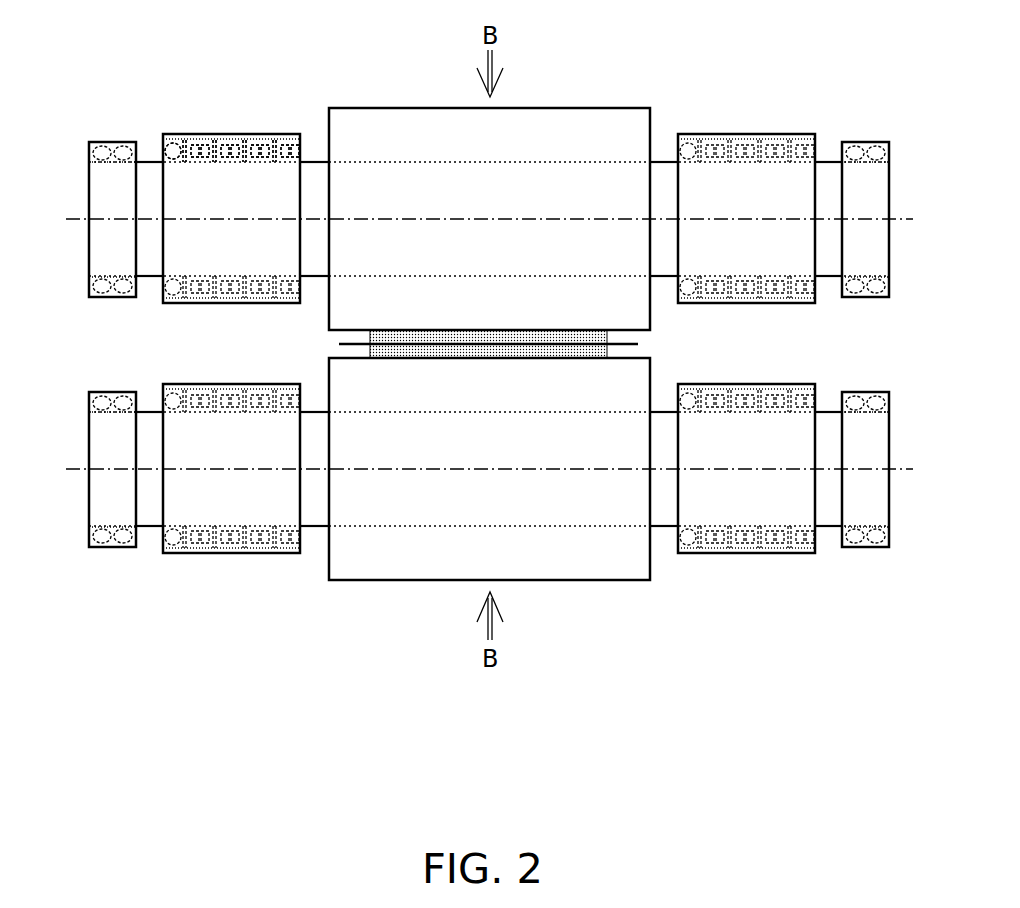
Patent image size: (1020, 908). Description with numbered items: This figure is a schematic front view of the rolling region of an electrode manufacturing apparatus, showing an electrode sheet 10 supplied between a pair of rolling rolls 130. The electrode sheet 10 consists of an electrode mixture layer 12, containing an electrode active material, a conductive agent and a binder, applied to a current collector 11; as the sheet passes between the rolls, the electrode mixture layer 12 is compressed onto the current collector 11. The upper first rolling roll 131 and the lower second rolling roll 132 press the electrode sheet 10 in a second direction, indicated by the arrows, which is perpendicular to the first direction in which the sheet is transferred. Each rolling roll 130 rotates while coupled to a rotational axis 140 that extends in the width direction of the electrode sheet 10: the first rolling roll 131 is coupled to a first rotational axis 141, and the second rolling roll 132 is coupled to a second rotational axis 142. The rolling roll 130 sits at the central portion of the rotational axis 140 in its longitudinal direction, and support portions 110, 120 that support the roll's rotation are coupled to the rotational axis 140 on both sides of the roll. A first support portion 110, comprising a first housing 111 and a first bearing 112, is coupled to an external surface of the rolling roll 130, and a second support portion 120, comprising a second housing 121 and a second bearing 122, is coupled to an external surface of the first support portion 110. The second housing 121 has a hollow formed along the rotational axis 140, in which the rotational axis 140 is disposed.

The electrode sheet 10 is at (412, 421).
The current collector 11 is at (358, 343).
The electrode mixture layer 12 is at (412, 336).
The first support portion 110 is at (489, 421).
The first housing 111 is at (205, 134).
The first bearing 112 is at (263, 141).
The second support portion 120 is at (287, 421).
The second housing 121 is at (98, 142).
The second bearing 122 is at (126, 146).
The rolling roll 130 is at (489, 421).
The first rolling roll 131 is at (592, 134).
The second rolling roll 132 is at (592, 554).
The rotational axis 140 is at (780, 421).
The first rotational axis 141 is at (828, 170).
The second rotational axis 142 is at (828, 520).